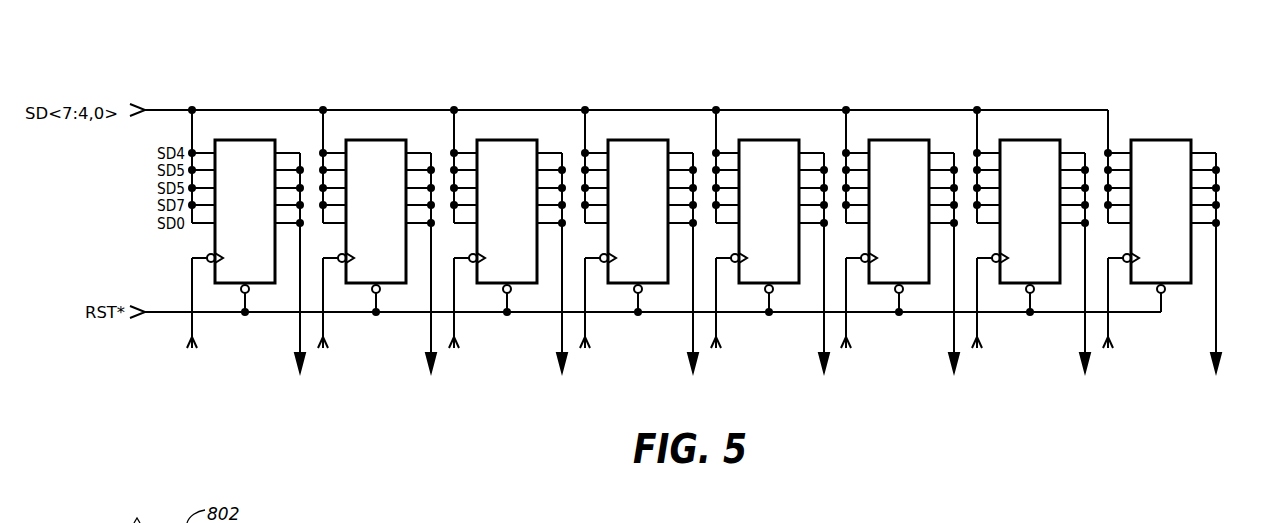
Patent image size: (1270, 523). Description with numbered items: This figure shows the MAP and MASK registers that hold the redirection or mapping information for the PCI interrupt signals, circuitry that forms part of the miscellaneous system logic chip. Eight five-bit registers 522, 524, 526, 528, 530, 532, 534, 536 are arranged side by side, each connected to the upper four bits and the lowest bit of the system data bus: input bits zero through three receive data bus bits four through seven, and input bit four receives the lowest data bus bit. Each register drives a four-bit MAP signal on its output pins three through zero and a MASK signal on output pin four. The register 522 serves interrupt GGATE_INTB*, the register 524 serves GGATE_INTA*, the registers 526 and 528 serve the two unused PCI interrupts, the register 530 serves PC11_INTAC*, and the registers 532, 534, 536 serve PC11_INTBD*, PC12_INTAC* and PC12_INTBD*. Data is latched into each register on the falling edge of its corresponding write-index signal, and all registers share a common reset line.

The register 522 is at (265, 259).
The register 524 is at (396, 259).
The register 526 is at (527, 259).
The register 528 is at (658, 259).
The register 530 is at (789, 259).
The register 532 is at (919, 259).
The register 534 is at (1050, 259).
The register 536 is at (1181, 261).